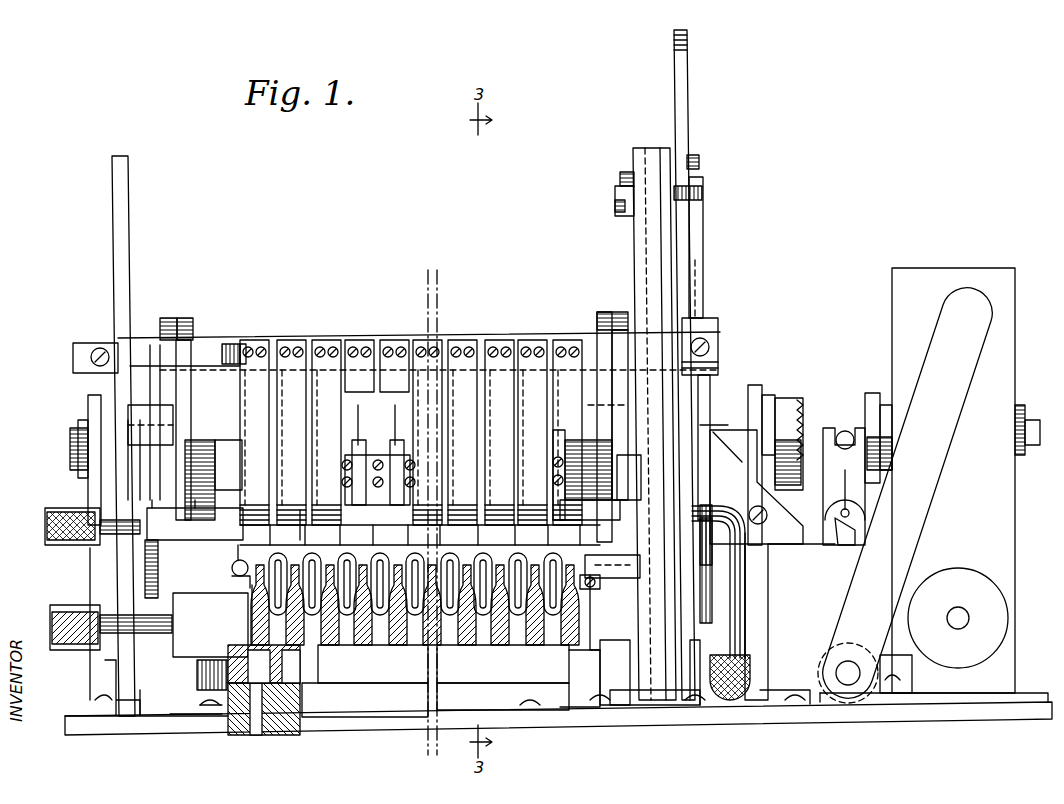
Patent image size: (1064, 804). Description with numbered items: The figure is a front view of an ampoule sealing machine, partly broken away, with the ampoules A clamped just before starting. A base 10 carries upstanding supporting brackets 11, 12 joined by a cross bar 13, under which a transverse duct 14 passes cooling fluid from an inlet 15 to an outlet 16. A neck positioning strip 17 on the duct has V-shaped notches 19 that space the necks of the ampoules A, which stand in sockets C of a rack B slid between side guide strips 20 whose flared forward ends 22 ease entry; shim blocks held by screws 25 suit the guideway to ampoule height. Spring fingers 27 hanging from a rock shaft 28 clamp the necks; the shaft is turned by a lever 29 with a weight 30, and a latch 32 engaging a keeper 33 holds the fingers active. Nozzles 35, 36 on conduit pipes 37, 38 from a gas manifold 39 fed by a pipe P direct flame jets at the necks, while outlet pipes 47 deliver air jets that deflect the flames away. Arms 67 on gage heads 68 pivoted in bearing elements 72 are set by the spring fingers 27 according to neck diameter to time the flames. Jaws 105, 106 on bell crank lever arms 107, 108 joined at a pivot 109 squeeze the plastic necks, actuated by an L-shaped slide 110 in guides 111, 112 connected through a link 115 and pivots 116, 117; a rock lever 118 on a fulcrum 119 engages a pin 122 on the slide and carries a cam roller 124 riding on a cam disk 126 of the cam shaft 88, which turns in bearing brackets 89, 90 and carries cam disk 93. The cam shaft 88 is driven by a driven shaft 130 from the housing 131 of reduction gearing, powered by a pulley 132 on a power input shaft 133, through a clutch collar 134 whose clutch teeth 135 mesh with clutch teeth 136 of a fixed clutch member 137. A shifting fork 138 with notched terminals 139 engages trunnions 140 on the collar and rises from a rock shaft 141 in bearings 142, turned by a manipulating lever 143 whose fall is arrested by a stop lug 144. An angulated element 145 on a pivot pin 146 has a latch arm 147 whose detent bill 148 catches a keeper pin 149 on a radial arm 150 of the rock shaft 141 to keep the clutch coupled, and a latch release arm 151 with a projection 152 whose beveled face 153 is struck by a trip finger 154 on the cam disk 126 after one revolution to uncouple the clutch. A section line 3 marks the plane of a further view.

The base 10 is at (595, 735).
The supporting bracket 11 is at (119, 216).
The supporting bracket 12 is at (662, 244).
The cross bar 13 is at (135, 495).
The transverse duct 14 is at (178, 540).
The inlet 15 is at (58, 510).
The outlet 16 is at (740, 632).
The ampoule neck positioning strip 17 is at (242, 515).
The V-shaped notches 19 is at (284, 520).
The side guide strips 20 is at (200, 704).
The forward ends 22 is at (197, 684).
The screws 25 is at (258, 708).
The spring fingers 27 is at (395, 345).
The rock shaft 28 is at (213, 330).
The lever 29 is at (682, 80).
The weight 30 is at (703, 248).
The latch 32 is at (699, 160).
The keeper 33 is at (702, 193).
The nozzle 35 is at (232, 572).
The nozzle 36 is at (290, 565).
The conduit pipe 37 is at (238, 588).
The conduit pipe 38 is at (395, 645).
The gas manifold 39 is at (183, 650).
The outlet pipes 47 is at (252, 598).
The vertically swingable arm 67 is at (393, 425).
The gage head 68 is at (395, 448).
The bearing elements 72 is at (370, 493).
The cam shaft 88 is at (74, 436).
The bearing bracket 89 is at (95, 575).
The bearing bracket 90 is at (755, 385).
The cam disk 93 is at (158, 572).
The jaw 105 is at (180, 455).
The jaw 106 is at (222, 452).
The bell crank lever arm 107 is at (166, 318).
The bell crank lever arm 108 is at (186, 318).
The pivot 109 is at (195, 428).
The L-shaped slide 110 is at (655, 482).
The upper guide 111 is at (640, 158).
The lower guide 112 is at (630, 648).
The link 115 is at (620, 220).
The pivot 116 is at (620, 178).
The pivot 117 is at (612, 360).
The rock lever 118 is at (665, 655).
The fulcrum 119 is at (590, 590).
The pin 122 is at (632, 560).
The cam roller 124 is at (712, 605).
The cam disk 126 is at (710, 318).
The driven shaft 130 is at (884, 405).
The housing 131 is at (985, 270).
The pulley 132 is at (960, 572).
The power input shaft 133 is at (958, 614).
The clutch collar 134 is at (865, 400).
The clutch teeth 135 is at (803, 475).
The clutch teeth 136 is at (792, 398).
The fixed clutch member 137 is at (790, 400).
The shifting fork 138 is at (865, 494).
The notched terminals 139 is at (880, 447).
The trunnions 140 is at (845, 431).
The rock shaft 141 is at (848, 685).
The bearings 142 is at (818, 710).
The manipulating lever 143 is at (928, 517).
The stop lug 144 is at (905, 678).
The angulated element 145 is at (770, 548).
The pivot pin 146 is at (770, 521).
The latch arm 147 is at (830, 548).
The detent bill 148 is at (851, 537).
The keeper pin 149 is at (844, 486).
The radial arm 150 is at (860, 526).
The latch release arm 151 is at (748, 486).
The projection 152 is at (755, 412).
The beveled face 153 is at (728, 418).
The trip finger 154 is at (700, 450).
The section line 3 is at (748, 580).
The ampoules A is at (252, 620).
The rack B is at (403, 672).
The sockets C is at (232, 645).
The pipe P is at (70, 650).